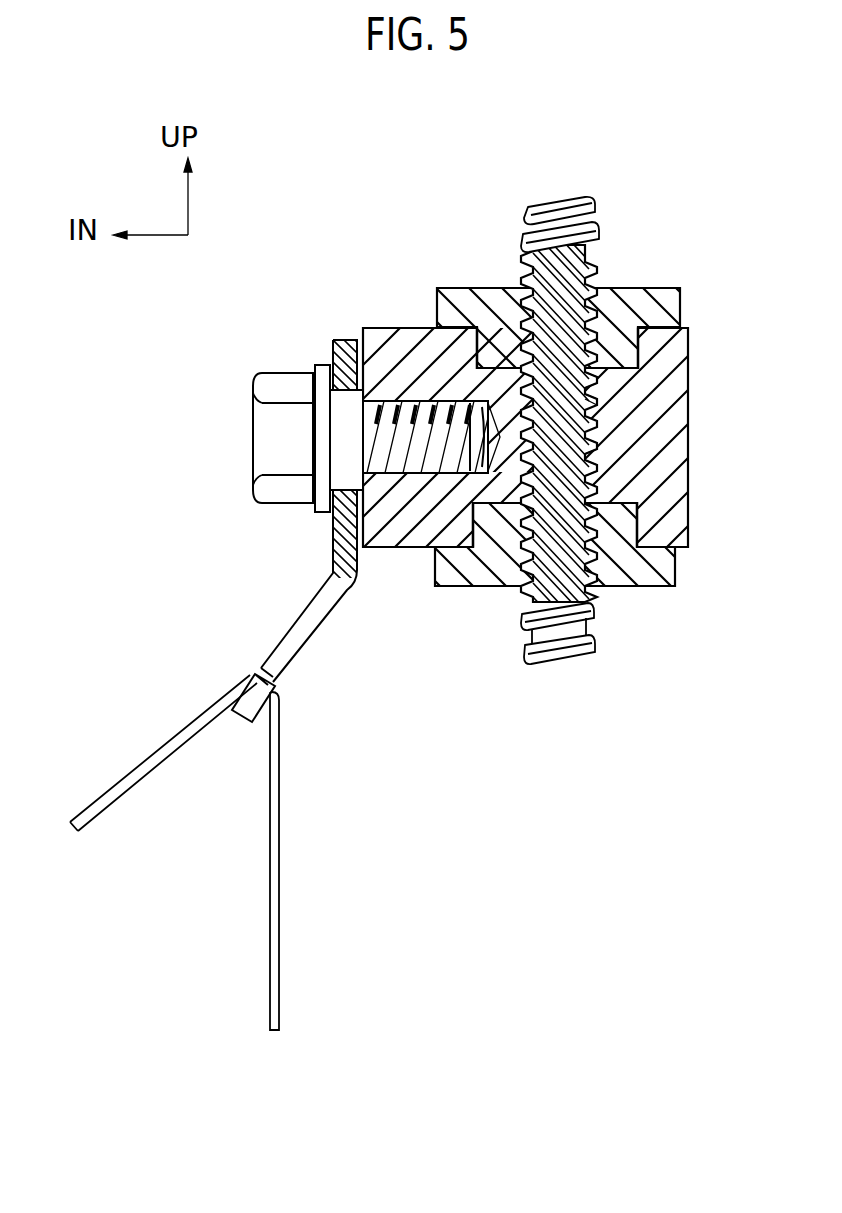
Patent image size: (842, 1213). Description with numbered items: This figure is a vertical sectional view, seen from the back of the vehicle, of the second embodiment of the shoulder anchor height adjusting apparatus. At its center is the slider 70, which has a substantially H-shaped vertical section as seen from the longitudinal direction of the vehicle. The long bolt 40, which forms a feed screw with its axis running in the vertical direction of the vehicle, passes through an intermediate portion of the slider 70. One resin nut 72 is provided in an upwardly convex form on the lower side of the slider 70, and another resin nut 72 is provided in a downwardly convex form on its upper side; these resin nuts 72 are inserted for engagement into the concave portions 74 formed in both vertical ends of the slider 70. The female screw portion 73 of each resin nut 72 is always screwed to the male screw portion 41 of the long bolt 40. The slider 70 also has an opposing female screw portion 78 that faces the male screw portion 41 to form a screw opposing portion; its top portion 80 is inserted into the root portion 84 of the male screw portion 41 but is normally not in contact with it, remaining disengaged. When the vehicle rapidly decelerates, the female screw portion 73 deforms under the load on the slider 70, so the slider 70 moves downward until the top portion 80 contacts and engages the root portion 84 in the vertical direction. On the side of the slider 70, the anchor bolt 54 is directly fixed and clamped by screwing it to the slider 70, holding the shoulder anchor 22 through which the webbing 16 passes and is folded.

The webbing 16 is at (283, 870).
The shoulder anchor 22 is at (345, 340).
The long bolt 40 is at (632, 402).
The male screw portion 41 is at (595, 203).
The anchor bolt 54 is at (248, 466).
The slider 70 is at (667, 430).
The resin nut 72 is at (660, 305).
The female screw portion 73 is at (568, 298).
The concave portion 74 is at (622, 358).
The opposing female screw portion 78 is at (597, 462).
The top portion 80 is at (597, 413).
The root portion 84 is at (603, 502).